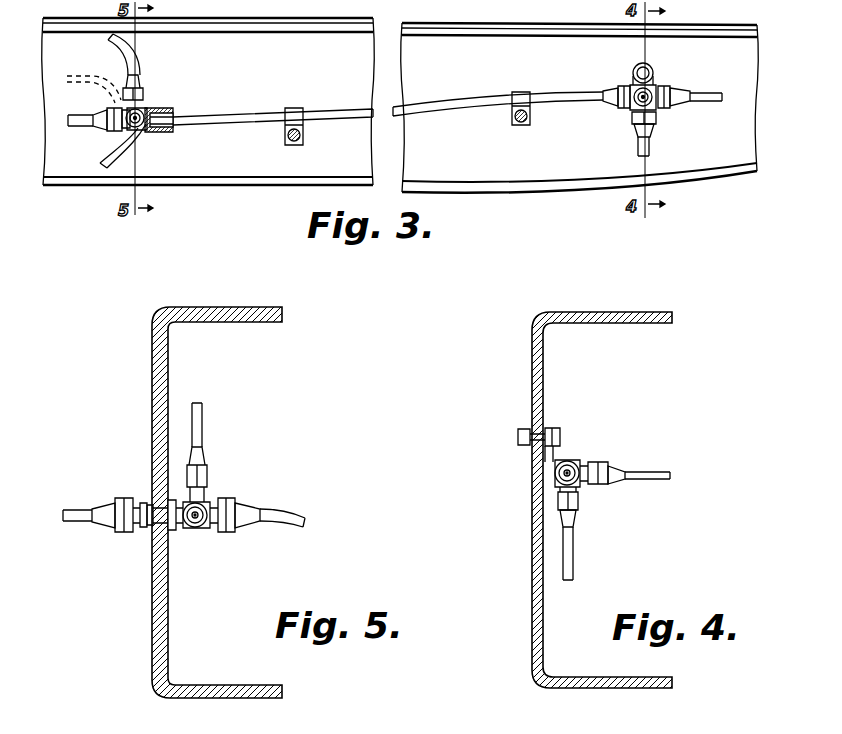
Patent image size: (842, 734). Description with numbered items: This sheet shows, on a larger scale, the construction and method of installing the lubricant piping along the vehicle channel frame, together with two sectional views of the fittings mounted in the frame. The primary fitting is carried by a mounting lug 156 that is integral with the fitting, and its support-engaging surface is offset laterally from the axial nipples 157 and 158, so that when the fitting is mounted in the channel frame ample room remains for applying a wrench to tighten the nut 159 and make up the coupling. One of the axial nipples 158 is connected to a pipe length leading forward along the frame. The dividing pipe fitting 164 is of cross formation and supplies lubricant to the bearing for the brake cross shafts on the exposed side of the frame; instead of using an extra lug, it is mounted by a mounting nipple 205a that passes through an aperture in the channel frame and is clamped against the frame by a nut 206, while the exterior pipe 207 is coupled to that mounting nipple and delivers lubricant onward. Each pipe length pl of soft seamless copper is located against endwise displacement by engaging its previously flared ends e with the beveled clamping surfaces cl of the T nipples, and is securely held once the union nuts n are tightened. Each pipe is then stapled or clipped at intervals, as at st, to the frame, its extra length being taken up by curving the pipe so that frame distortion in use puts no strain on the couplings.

In FIG. 3, the union nut n is at (156, 106).
In FIG. 3, the flared end e is at (168, 111).
In FIG. 3, the beveled clamping surface cl is at (148, 130).
In FIG. 3, the staple or clip st is at (300, 106).
In FIG. 3, the pipe length pl is at (320, 127).
In FIG. 3, the axial nipple 157 is at (636, 86).
In FIG. 4, the axial nipple 157 is at (573, 461).
In FIG. 3, the axial nipple 158 is at (660, 88).
In FIG. 3, the nut 159 is at (612, 103).
In FIG. 5, the dividing pipe fitting 164 is at (178, 500).
In FIG. 5, the mounting nipple 205a is at (144, 502).
In FIG. 5, the nut 206 is at (147, 527).
In FIG. 5, the exterior pipe 207 is at (80, 522).
In FIG. 4, the mounting lug 156 is at (550, 426).